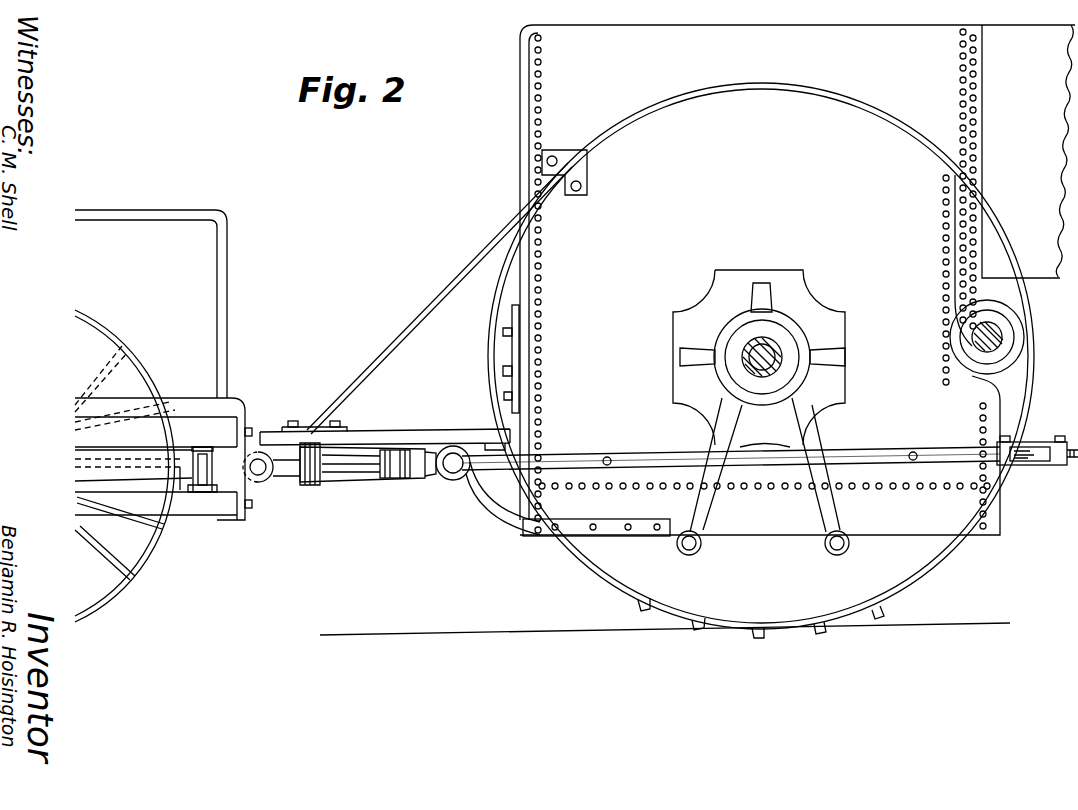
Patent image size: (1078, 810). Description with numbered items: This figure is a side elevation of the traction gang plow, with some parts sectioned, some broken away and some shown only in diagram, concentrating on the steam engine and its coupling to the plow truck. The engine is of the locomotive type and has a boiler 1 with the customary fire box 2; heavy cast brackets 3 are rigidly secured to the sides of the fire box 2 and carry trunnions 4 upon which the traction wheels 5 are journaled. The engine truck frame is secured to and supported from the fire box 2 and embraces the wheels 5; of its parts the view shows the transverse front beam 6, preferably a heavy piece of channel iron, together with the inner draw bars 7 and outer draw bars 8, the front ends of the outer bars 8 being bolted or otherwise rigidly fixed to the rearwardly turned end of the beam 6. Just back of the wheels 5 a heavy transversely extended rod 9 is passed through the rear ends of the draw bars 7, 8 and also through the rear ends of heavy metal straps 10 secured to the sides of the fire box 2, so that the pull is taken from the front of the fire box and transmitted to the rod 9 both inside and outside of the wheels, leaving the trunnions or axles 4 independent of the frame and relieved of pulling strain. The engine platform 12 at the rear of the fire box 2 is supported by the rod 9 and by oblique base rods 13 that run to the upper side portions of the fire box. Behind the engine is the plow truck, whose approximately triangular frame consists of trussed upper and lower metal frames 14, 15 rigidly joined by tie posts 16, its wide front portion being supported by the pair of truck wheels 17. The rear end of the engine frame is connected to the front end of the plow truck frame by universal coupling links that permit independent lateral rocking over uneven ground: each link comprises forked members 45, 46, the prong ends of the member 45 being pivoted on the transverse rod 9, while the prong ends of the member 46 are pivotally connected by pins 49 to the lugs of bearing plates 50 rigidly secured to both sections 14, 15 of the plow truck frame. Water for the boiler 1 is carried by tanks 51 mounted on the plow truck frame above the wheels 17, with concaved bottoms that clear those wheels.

The boiler 1 is at (560, 108).
The fire box 2 is at (950, 420).
The cast brackets 3 is at (800, 340).
The trunnions 4 is at (750, 352).
The traction wheels 5 is at (888, 600).
The transverse front beam 6 is at (1038, 465).
The inner draw bars 7 is at (870, 452).
The outer draw bars 8 is at (582, 458).
The transverse rod 9 is at (450, 470).
The metal straps 10 is at (505, 522).
The engine platform 12 is at (418, 432).
The oblique base rods 13 is at (438, 312).
The upper metal frame 14 is at (170, 428).
The lower metal frame 15 is at (160, 510).
The tie posts 16 is at (200, 494).
The truck wheels 17 is at (142, 572).
The forked link member 45 is at (400, 472).
The forked link member 46 is at (290, 472).
The pins 49 is at (260, 455).
The bearing plates 50 is at (248, 412).
The water tanks 51 is at (200, 272).